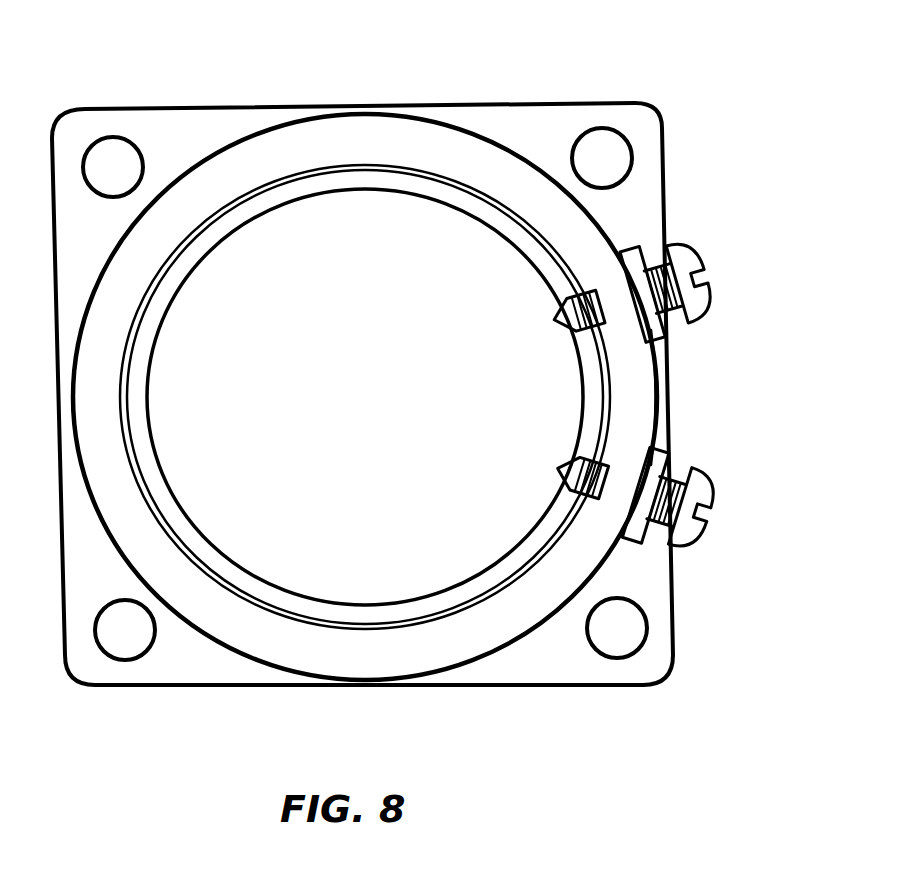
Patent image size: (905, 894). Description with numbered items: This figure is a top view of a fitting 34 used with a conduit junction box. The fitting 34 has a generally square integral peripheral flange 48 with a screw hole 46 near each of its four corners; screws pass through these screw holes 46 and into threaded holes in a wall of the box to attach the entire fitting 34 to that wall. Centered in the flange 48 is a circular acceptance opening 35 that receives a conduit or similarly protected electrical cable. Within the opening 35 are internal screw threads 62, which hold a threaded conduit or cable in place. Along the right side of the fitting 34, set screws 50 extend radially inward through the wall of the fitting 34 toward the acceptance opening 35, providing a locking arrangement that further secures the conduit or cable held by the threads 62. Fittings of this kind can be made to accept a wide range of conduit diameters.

The fitting 34 is at (374, 98).
The acceptance opening 35 is at (428, 431).
The screw holes 46 is at (118, 138).
The integral peripheral flange 48 is at (116, 597).
The set screw 50 is at (705, 312).
The internal screw threads 62 is at (150, 345).